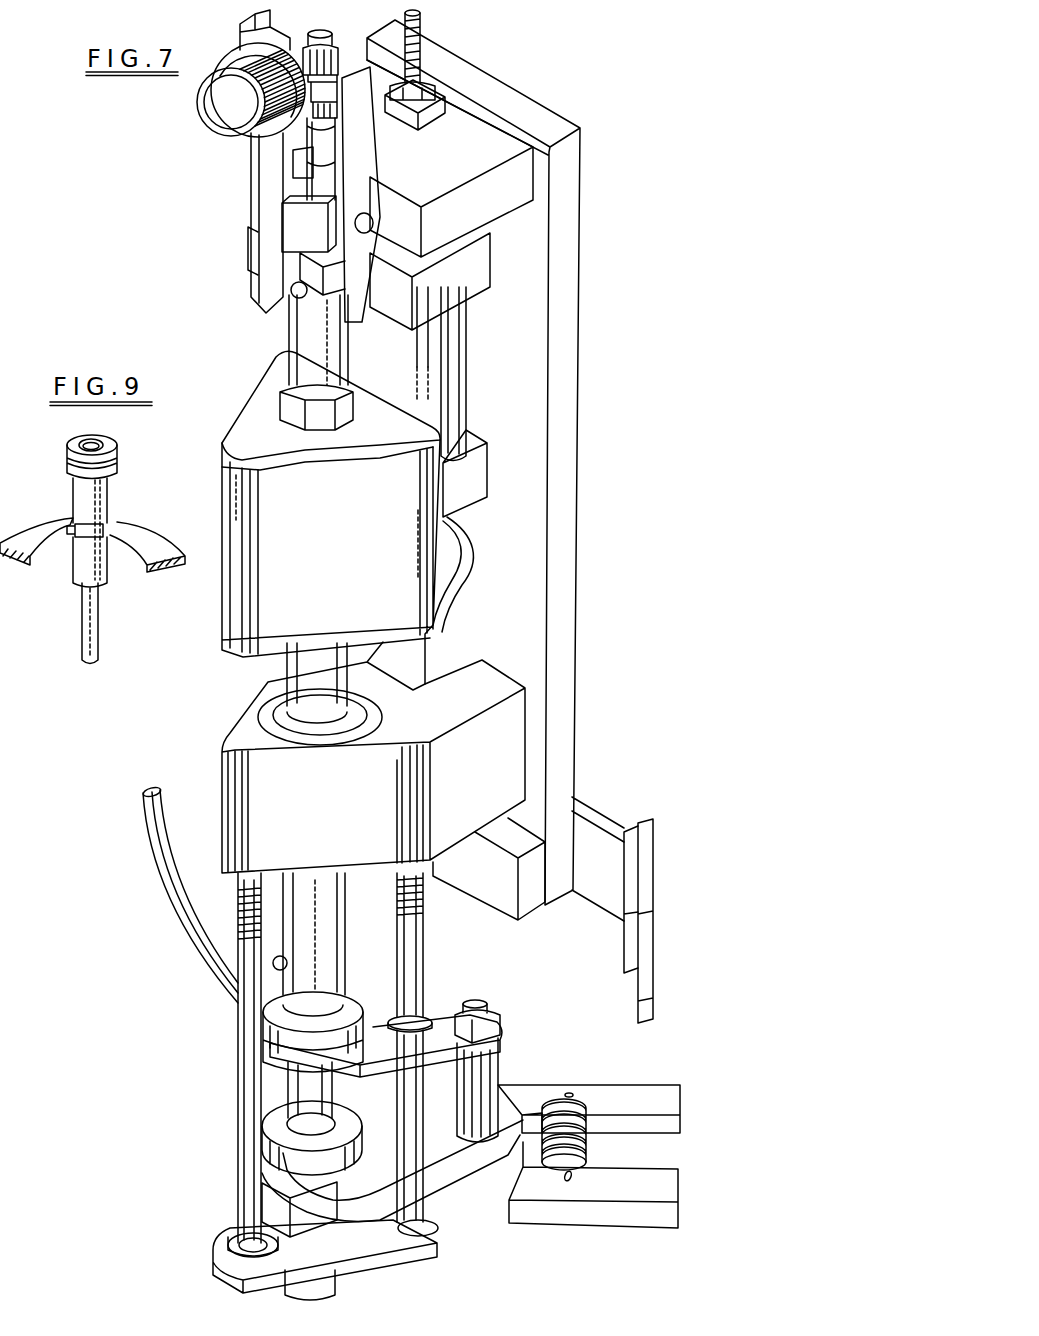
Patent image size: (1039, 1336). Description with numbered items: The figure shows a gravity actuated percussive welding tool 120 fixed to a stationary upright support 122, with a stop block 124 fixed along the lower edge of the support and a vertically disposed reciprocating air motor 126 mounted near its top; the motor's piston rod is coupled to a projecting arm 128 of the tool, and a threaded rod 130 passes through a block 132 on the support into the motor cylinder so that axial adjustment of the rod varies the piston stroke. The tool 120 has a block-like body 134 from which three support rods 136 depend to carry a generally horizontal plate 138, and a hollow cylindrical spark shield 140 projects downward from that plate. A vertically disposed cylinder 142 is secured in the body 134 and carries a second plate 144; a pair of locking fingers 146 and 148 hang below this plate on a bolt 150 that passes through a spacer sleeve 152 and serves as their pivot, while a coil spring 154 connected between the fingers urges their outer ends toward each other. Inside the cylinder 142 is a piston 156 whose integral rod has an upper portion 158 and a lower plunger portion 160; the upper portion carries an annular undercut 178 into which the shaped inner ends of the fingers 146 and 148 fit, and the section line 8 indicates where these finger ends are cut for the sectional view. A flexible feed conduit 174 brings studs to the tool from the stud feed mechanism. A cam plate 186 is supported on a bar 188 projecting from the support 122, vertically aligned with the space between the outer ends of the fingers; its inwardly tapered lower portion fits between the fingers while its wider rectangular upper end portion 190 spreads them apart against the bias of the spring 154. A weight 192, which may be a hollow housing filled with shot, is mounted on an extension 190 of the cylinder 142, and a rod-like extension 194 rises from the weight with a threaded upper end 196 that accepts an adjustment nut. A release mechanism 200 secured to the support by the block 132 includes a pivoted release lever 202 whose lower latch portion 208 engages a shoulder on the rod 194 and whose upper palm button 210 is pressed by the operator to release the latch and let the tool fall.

In FIG. 7, the stationary upright support 122 is at (568, 557).
In FIG. 7, the stop block 124 is at (529, 897).
In FIG. 7, the reciprocating air motor 126 is at (443, 387).
In FIG. 7, the projecting arm 128 is at (450, 557).
In FIG. 7, the threaded rod 130 is at (422, 28).
In FIG. 7, the block 132 is at (512, 133).
In FIG. 7, the block-like body 134 is at (312, 824).
In FIG. 7, the support rods 136 is at (410, 962).
In FIG. 7, the horizontal plate 138 is at (398, 1252).
In FIG. 7, the spark shield 140 is at (343, 1274).
In FIG. 7, the cylinder 142 is at (335, 922).
In FIG. 7, the second plate 144 is at (437, 1010).
In FIG. 7, the locking finger 146 is at (640, 1092).
In FIG. 9, the locking finger 146 is at (160, 547).
In FIG. 7, the locking finger 148 is at (613, 1213).
In FIG. 9, the locking finger 148 is at (42, 527).
In FIG. 7, the bolt 150 is at (485, 1012).
In FIG. 7, the spacer sleeve 152 is at (498, 1080).
In FIG. 7, the coil spring 154 is at (588, 1136).
In FIG. 9, the piston 156 is at (110, 455).
In FIG. 9, the upper piston rod portion 158 is at (83, 485).
In FIG. 9, the lower plunger portion 160 is at (85, 633).
In FIG. 7, the flexible feed conduit 174 is at (170, 873).
In FIG. 9, the annular undercut 178 is at (90, 530).
In FIG. 7, the cam plate 186 is at (695, 921).
In FIG. 7, the bar 188 is at (655, 965).
In FIG. 7, the rectangular upper end portion 190 is at (303, 673).
In FIG. 7, the weight 192 is at (237, 615).
In FIG. 7, the rod-like extension 194 is at (305, 333).
In FIG. 7, the threaded upper end 196 is at (330, 60).
In FIG. 7, the release mechanism 200 is at (228, 161).
In FIG. 7, the release lever 202 is at (268, 192).
In FIG. 7, the latch portion 208 is at (291, 288).
In FIG. 7, the palm button 210 is at (227, 116).
In FIG. 7, the section line 8 is at (228, 1142).
In FIG. 7, the gravity actuated percussive welding tool 120 is at (336, 757).